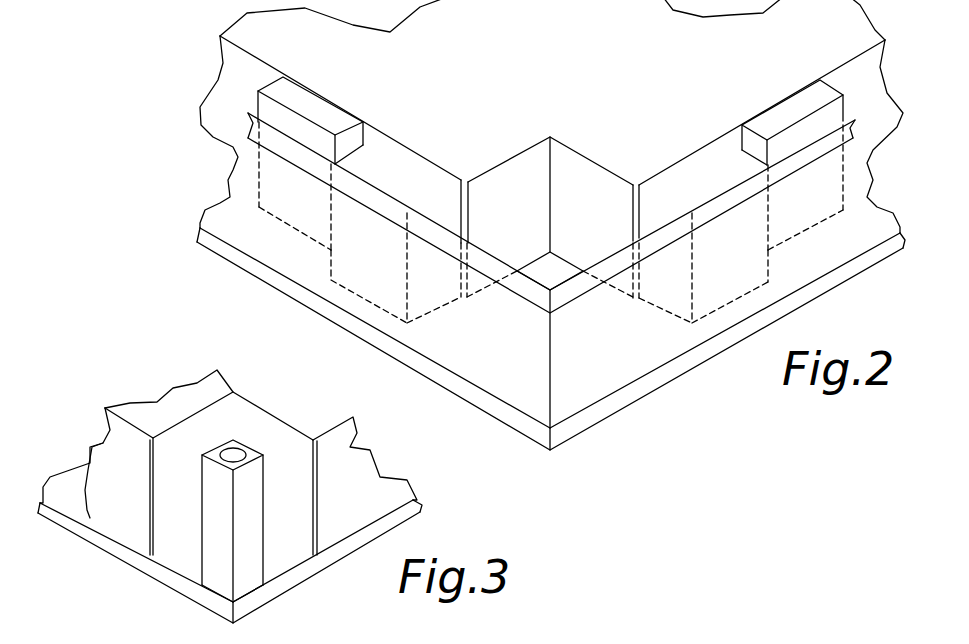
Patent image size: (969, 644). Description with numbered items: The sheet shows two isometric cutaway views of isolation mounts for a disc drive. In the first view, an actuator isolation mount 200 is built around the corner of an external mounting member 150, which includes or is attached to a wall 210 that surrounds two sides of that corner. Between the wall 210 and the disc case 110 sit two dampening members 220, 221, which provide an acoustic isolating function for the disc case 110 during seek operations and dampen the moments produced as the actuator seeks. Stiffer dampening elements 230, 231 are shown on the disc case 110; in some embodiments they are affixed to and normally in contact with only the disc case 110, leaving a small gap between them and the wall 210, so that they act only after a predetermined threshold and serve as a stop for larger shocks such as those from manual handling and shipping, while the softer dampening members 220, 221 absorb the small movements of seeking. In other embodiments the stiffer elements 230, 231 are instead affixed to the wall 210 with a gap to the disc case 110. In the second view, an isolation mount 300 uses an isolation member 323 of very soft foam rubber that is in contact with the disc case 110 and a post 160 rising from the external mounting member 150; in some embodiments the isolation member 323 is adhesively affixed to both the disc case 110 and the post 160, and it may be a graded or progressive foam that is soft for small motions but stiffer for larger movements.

In FIG. 2, the disc case 110 is at (235, 22).
In FIG. 3, the disc case 110 is at (173, 390).
In FIG. 2, the external mounting member 150 is at (640, 397).
In FIG. 3, the external mounting member 150 is at (270, 597).
In FIG. 3, the post 160 is at (217, 532).
In FIG. 2, the actuator isolation mount 200 is at (148, 53).
In FIG. 2, the wall 210 is at (490, 373).
In FIG. 2, the dampening member 220 is at (410, 160).
In FIG. 2, the dampening member 221 is at (692, 165).
In FIG. 2, the stiffer dampening element 230 is at (313, 100).
In FIG. 2, the stiffer dampening element 231 is at (782, 105).
In FIG. 3, the isolation mount 300 is at (140, 350).
In FIG. 3, the isolation member 323 is at (260, 420).